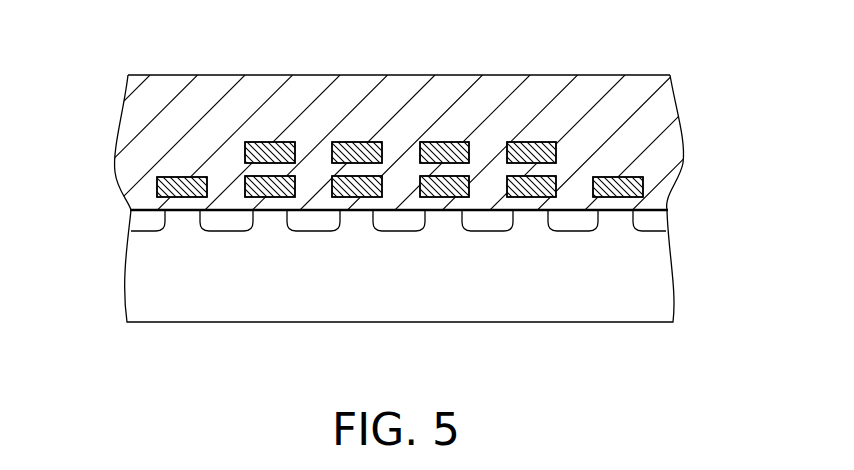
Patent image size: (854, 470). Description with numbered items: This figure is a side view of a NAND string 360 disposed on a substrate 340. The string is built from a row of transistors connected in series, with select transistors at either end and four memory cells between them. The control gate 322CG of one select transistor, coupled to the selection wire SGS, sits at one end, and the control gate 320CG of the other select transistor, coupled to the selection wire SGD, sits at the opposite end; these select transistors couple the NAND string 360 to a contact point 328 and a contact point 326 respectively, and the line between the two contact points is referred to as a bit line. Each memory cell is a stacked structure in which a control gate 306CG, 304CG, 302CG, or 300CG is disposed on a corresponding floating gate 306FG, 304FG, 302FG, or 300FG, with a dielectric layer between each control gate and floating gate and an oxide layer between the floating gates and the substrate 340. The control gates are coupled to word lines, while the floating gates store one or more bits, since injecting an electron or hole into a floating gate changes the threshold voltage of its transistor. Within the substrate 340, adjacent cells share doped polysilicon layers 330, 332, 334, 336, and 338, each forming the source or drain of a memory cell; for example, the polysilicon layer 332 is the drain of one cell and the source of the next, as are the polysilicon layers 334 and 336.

The control gate 300CG is at (532, 155).
The control gate 302CG is at (445, 155).
The control gate 304CG is at (357, 155).
The control gate 306CG is at (272, 155).
The control gate 320CG is at (625, 187).
The control gate 322CG is at (182, 187).
The floating gate 300FG is at (531, 198).
The floating gate 302FG is at (444, 198).
The floating gate 304FG is at (357, 198).
The floating gate 306FG is at (270, 198).
The contact point 326 is at (650, 221).
The contact point 328 is at (150, 222).
The doped polysilicon layer 330 is at (222, 222).
The doped polysilicon layer 332 is at (309, 222).
The doped polysilicon layer 334 is at (396, 222).
The doped polysilicon layer 336 is at (484, 222).
The doped polysilicon layer 338 is at (571, 222).
The substrate 340 is at (645, 282).
The NAND string 360 is at (686, 379).